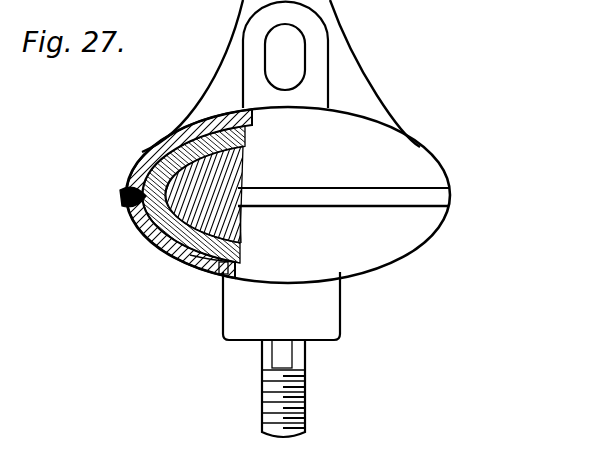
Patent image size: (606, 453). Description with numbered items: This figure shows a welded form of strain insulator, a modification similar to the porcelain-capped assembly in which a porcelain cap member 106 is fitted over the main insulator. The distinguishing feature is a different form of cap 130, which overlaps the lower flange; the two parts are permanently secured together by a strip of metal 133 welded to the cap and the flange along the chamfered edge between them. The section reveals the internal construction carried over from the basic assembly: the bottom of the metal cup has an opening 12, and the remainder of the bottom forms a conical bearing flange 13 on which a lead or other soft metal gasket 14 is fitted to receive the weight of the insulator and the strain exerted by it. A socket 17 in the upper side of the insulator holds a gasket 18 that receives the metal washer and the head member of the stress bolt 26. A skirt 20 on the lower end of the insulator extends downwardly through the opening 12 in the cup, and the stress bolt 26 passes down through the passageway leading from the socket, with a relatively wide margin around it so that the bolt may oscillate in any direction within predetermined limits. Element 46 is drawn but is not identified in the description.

The porcelain cap member 106 is at (128, 172).
The cap 130 is at (160, 150).
The socket 17 is at (160, 242).
The soft metal gasket 14 is at (183, 262).
The conical bearing flange 13 is at (197, 273).
The opening 12 is at (217, 277).
The gasket 18 is at (240, 213).
The strip of metal 133 is at (118, 200).
The skirt 20 is at (337, 318).
The pin 46 is at (282, 352).
The stress bolt 26 is at (270, 372).